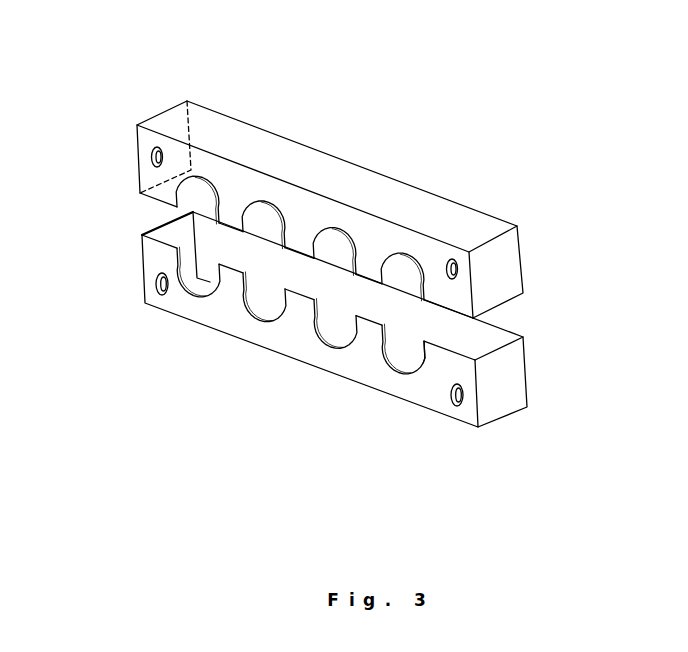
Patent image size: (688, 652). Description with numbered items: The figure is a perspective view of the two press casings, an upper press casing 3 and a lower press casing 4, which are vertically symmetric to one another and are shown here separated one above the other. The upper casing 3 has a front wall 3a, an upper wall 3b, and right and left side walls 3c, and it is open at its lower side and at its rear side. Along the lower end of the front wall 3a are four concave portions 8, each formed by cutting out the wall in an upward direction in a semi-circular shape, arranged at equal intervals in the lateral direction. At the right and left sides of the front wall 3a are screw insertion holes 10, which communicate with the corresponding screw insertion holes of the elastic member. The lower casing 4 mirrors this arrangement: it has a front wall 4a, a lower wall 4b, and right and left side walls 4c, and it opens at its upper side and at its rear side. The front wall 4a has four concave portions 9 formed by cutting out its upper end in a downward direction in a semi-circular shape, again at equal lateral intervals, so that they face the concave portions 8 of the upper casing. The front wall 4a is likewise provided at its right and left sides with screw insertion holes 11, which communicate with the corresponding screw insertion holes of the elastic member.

The upper press casing 3 is at (508, 215).
The front wall 3a is at (442, 250).
The upper wall 3b is at (215, 108).
The right and left side walls 3c is at (167, 125).
The lower press casing 4 is at (455, 421).
The front wall 4a is at (180, 307).
The lower wall 4b is at (420, 372).
The right and left side walls 4c is at (167, 228).
The concave portions 8 is at (397, 252).
The concave portions 9 is at (413, 363).
The screw insertion holes 10 is at (152, 157).
The screw insertion holes 11 is at (158, 283).